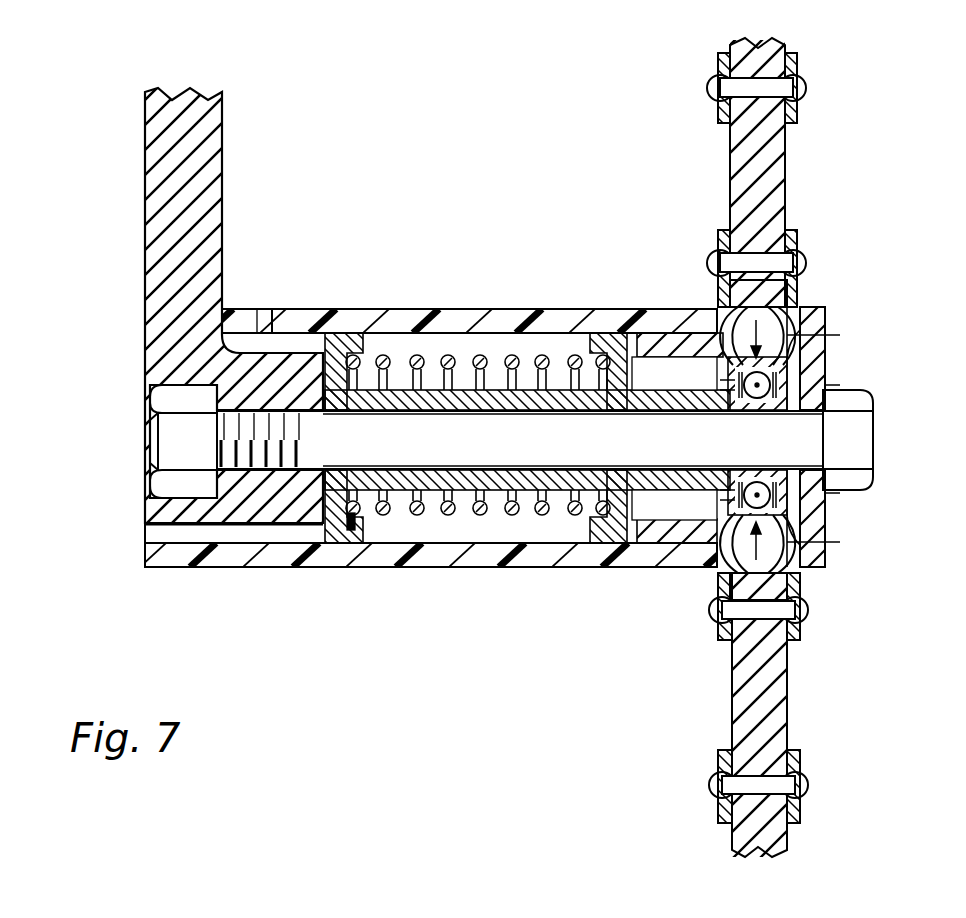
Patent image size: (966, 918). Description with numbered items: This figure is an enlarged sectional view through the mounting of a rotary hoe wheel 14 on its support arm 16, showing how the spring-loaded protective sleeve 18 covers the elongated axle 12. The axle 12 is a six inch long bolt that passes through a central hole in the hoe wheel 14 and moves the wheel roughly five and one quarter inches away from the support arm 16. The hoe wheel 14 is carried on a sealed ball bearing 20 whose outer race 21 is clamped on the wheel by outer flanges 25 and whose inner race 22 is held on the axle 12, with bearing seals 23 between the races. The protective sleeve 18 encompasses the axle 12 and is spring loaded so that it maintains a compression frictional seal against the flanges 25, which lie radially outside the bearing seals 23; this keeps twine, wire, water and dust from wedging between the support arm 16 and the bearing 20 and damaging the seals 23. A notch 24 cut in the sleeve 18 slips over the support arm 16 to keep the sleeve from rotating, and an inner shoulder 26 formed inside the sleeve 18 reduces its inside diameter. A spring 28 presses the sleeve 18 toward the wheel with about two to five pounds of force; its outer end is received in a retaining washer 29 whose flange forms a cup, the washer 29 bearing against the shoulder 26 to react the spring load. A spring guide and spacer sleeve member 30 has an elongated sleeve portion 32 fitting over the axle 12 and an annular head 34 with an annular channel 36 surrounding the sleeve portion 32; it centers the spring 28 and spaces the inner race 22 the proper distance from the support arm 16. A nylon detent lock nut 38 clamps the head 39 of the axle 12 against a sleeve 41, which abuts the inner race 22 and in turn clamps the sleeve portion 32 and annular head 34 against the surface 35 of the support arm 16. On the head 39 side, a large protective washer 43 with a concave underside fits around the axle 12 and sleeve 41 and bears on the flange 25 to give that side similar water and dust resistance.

The elongated axle 12 is at (692, 448).
The hoe wheel 14 is at (793, 127).
The support arm 16 is at (222, 147).
The protective sleeve 18 is at (398, 308).
The sealed ball bearing 20 is at (825, 317).
The outer race 21 is at (800, 530).
The inner race 22 is at (757, 398).
The bearing seals 23 is at (730, 384).
The notch 24 is at (228, 309).
The outer flanges 25 is at (720, 320).
The inner shoulder 26 is at (660, 318).
The spring 28 is at (490, 358).
The retaining washer 29 is at (602, 334).
The spring guide and spacer sleeve member 30 is at (418, 500).
The elongated sleeve portion 32 is at (455, 512).
The annular head 34 is at (332, 522).
The surface 35 is at (288, 560).
The annular channel 36 is at (356, 522).
The nylon detent lock nut 38 is at (180, 432).
The axle head 39 is at (868, 399).
The sleeve 41 is at (852, 432).
The protective washer 43 is at (826, 530).